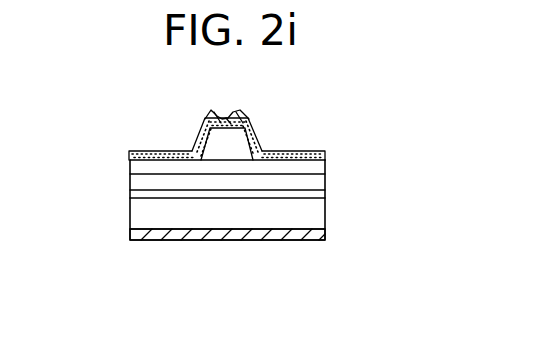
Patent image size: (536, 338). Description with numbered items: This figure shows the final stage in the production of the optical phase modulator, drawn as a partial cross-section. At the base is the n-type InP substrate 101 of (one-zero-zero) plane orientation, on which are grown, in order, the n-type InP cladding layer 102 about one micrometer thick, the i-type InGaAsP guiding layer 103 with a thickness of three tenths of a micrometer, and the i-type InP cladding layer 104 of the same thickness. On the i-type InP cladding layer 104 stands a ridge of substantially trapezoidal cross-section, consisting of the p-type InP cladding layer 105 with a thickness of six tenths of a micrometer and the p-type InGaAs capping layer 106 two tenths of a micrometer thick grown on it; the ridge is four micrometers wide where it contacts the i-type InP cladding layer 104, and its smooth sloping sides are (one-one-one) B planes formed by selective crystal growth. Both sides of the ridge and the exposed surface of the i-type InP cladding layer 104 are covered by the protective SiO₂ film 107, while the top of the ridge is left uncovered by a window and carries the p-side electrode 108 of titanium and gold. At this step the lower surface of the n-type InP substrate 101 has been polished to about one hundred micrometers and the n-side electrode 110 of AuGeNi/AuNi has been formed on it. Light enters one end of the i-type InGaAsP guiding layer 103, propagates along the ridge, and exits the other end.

The n-type InP substrate 101 is at (313, 220).
The n-type InP cladding layer 102 is at (140, 197).
The i-type InGaAsP guiding layer 103 is at (313, 185).
The i-type InP cladding layer 104 is at (313, 169).
The p-type InP cladding layer 105 is at (245, 152).
The p-type InGaAs capping layer 106 is at (244, 131).
The SiO₂ film 107 is at (158, 148).
The p-side electrode 108 is at (227, 118).
The n-side electrode 110 is at (318, 238).